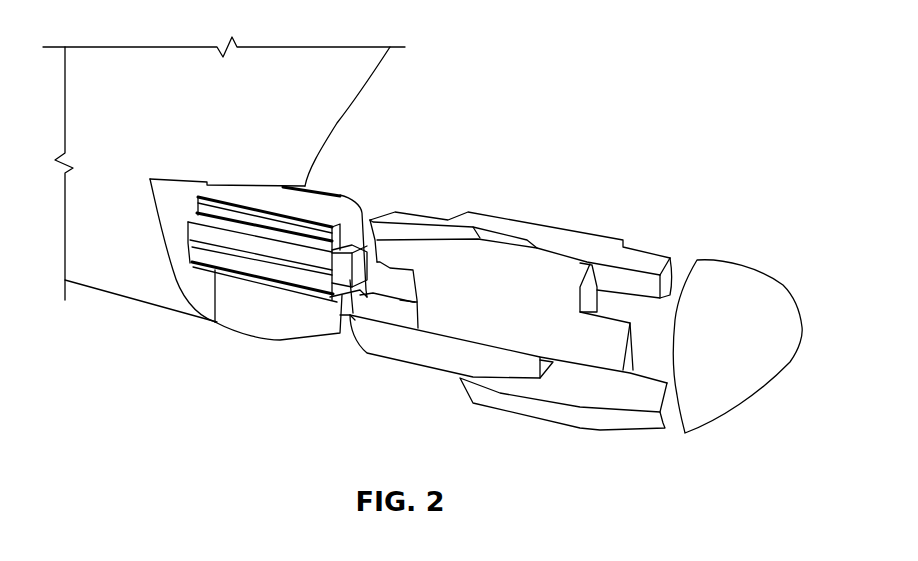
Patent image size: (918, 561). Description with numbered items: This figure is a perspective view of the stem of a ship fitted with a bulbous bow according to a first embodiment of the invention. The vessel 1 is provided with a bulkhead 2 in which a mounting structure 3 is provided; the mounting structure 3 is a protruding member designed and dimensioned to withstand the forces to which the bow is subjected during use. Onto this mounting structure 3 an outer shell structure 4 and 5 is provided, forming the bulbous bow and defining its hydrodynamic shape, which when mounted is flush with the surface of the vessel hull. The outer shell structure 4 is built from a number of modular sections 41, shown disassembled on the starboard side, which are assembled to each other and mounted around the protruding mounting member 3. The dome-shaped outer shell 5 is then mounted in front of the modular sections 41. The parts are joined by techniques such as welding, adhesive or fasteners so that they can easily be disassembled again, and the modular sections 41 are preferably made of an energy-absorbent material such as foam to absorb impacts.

The vessel 1 is at (337, 82).
The bulkhead 2 is at (199, 280).
The mounting structure 3 is at (278, 245).
The outer shell structure 4 is at (302, 317).
The modular sections 41 is at (407, 233).
The dome-shaped outer shell 5 is at (732, 287).